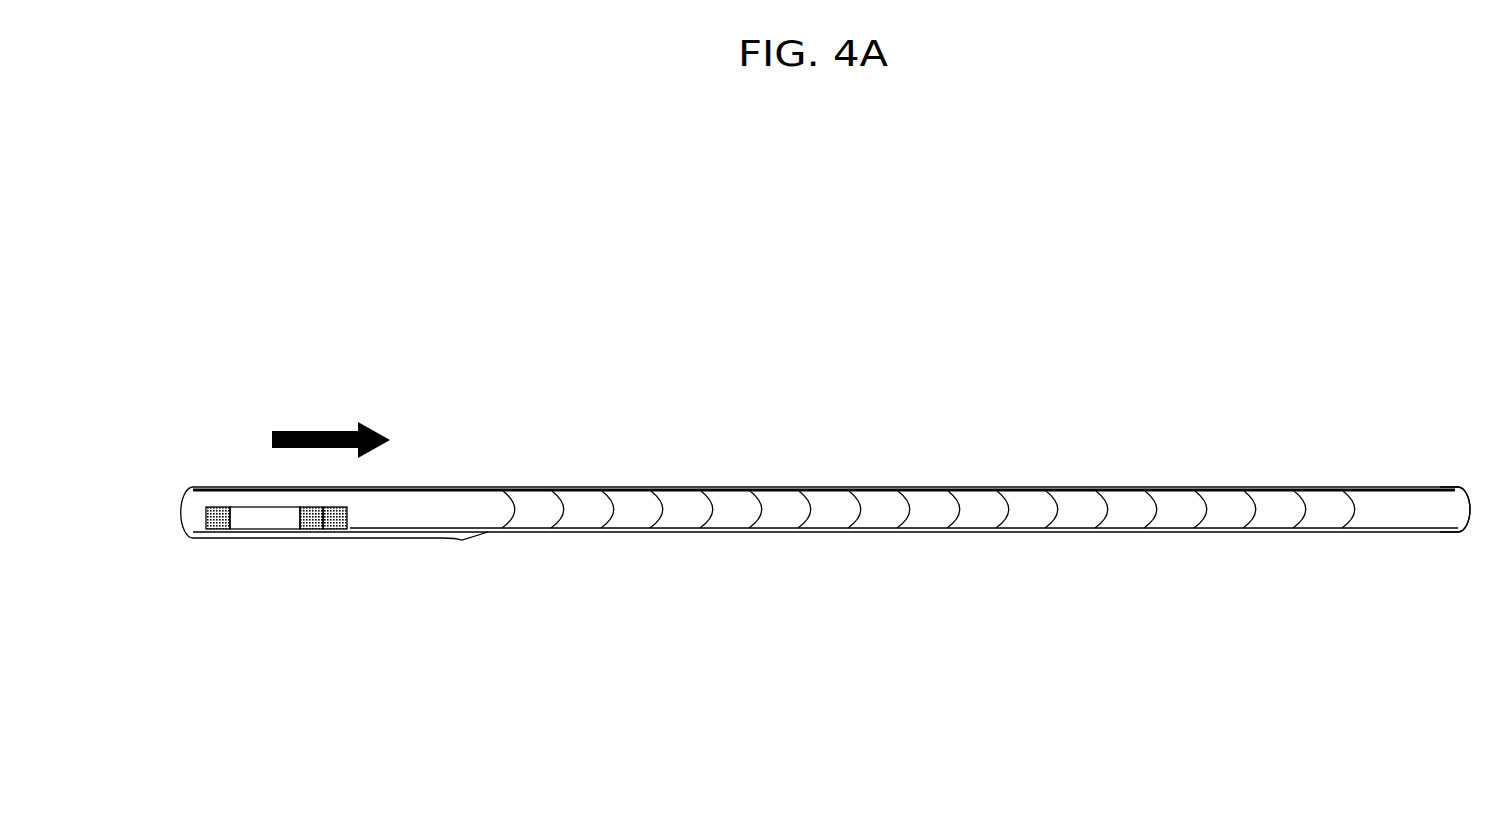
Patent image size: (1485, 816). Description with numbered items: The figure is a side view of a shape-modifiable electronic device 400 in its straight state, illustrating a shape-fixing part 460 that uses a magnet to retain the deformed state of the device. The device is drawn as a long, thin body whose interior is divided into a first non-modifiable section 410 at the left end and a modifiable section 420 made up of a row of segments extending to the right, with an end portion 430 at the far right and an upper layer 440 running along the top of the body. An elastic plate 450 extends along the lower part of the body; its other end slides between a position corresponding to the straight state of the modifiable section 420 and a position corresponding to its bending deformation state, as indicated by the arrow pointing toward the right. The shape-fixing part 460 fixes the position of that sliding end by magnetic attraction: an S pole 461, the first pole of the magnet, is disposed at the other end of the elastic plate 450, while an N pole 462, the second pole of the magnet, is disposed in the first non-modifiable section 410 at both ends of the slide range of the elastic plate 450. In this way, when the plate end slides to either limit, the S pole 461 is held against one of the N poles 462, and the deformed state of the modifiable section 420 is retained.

The shape-modifiable electronic device 400 is at (297, 348).
The first non-modifiable section 410 is at (410, 560).
The modifiable section 420 is at (884, 440).
The end cap / distal end 430 is at (1412, 555).
The upper plate / display layer 440 is at (527, 489).
The elastic plate 450 is at (576, 532).
The shape-fixing part 460 is at (184, 518).
The S pole 461 is at (298, 520).
The N pole 462 is at (335, 530).